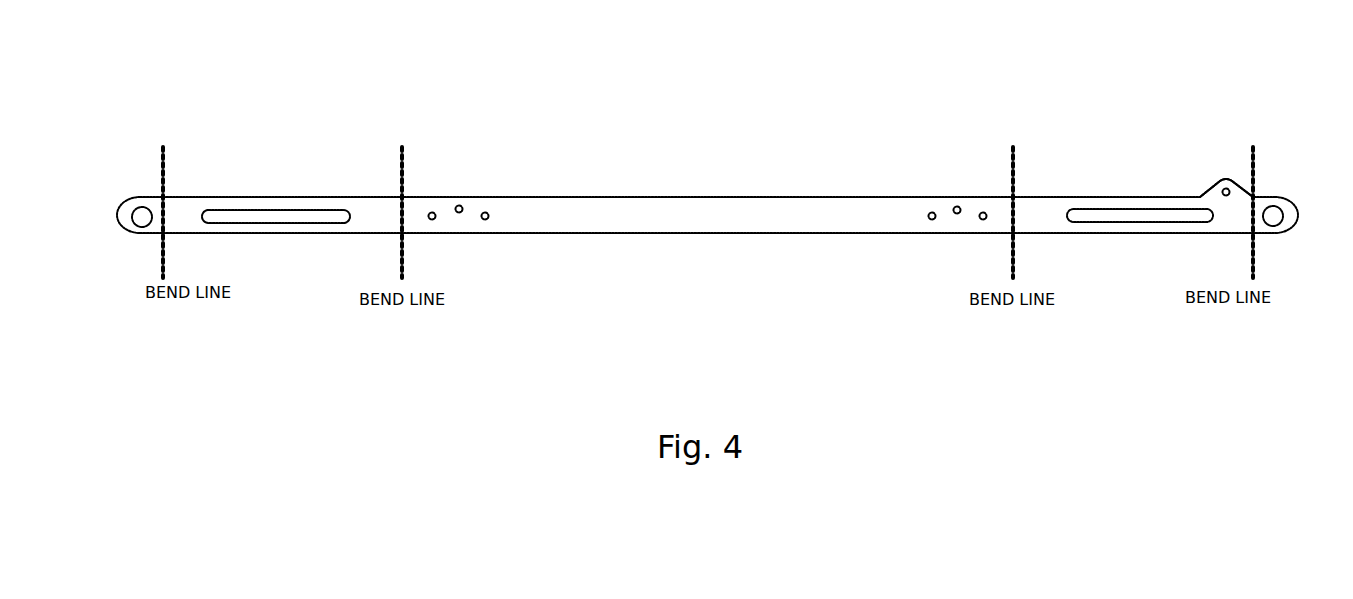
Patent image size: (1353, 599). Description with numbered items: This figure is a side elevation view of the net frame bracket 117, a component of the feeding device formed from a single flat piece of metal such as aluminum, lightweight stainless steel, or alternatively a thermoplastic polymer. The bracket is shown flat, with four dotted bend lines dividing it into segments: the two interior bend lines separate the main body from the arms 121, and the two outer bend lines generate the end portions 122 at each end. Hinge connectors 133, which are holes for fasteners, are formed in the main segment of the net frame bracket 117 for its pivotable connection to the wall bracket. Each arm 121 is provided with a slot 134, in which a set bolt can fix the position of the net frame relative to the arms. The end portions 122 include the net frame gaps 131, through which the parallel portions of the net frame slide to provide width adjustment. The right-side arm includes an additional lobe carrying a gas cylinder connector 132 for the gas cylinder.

The net frame bracket 117 is at (553, 272).
The arm 121 is at (1070, 198).
The end portion 122 is at (1300, 136).
The net frame gap 131 is at (146, 212).
The gas cylinder connector 132 is at (1227, 179).
The hinge connector 133 is at (464, 187).
The slot 134 is at (1133, 322).